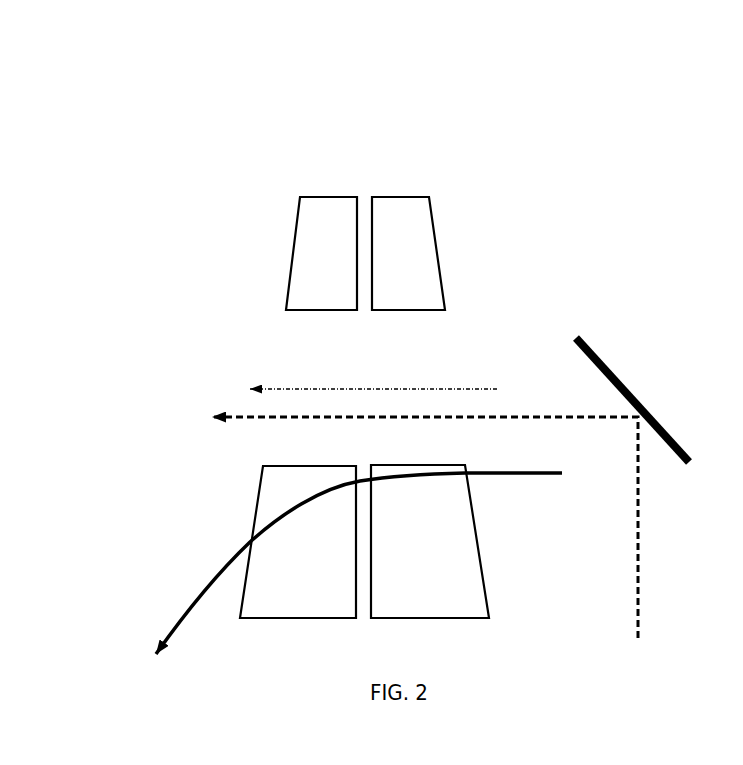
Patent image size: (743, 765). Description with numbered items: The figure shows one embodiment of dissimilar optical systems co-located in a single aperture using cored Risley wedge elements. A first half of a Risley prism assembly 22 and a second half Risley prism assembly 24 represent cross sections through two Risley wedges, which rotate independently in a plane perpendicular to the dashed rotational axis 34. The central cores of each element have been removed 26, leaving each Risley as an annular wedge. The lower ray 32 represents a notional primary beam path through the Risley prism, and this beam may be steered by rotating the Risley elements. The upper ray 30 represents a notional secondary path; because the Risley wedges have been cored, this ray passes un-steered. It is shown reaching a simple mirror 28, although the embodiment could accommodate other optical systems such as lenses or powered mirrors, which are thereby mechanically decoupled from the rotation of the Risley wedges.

The first half of a Risley prism assembly 22 is at (338, 204).
The second half Risley prism assembly 24 is at (405, 204).
The removed central cores 26 is at (437, 337).
The simple mirror 28 is at (607, 358).
The upper ray 30 is at (430, 549).
The lower ray 32 is at (379, 557).
The rotational axis 34 is at (278, 380).